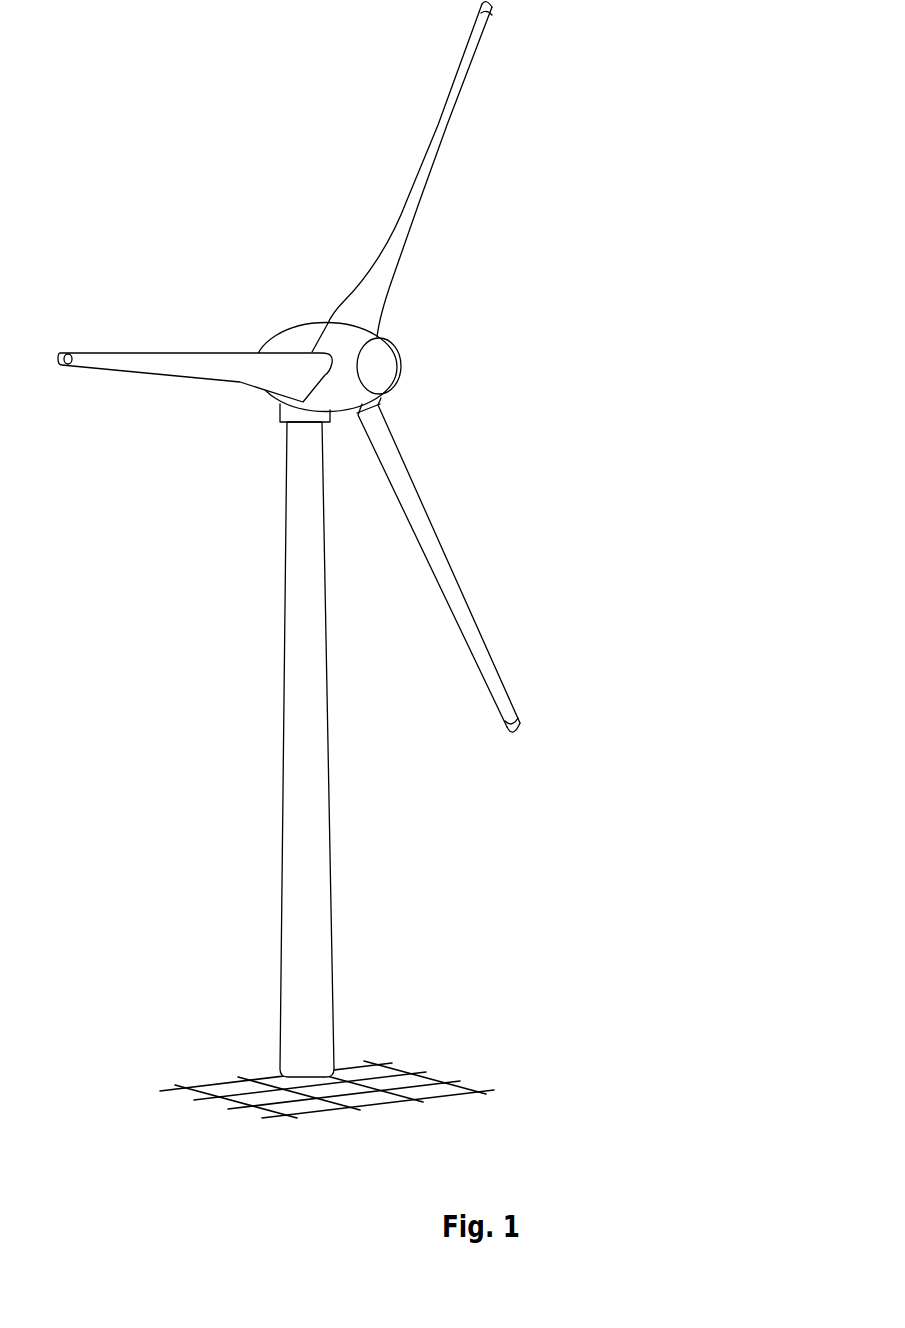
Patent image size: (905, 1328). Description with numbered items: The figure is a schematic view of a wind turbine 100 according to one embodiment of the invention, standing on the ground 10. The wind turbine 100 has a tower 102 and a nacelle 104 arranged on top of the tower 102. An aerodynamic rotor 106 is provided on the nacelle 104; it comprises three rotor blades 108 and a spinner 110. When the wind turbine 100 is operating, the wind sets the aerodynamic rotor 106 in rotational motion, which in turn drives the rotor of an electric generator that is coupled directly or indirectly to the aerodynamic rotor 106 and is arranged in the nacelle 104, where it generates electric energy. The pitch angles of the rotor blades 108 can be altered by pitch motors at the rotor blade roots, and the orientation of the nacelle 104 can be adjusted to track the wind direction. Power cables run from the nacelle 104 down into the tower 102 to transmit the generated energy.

The ground / foundation 10 is at (393, 1085).
The wind turbine 100 is at (335, 539).
The tower 102 is at (313, 852).
The nacelle 104 is at (297, 340).
The aerodynamic rotor 106 is at (335, 367).
The rotor blades 108 is at (443, 125).
The spinner 110 is at (382, 367).